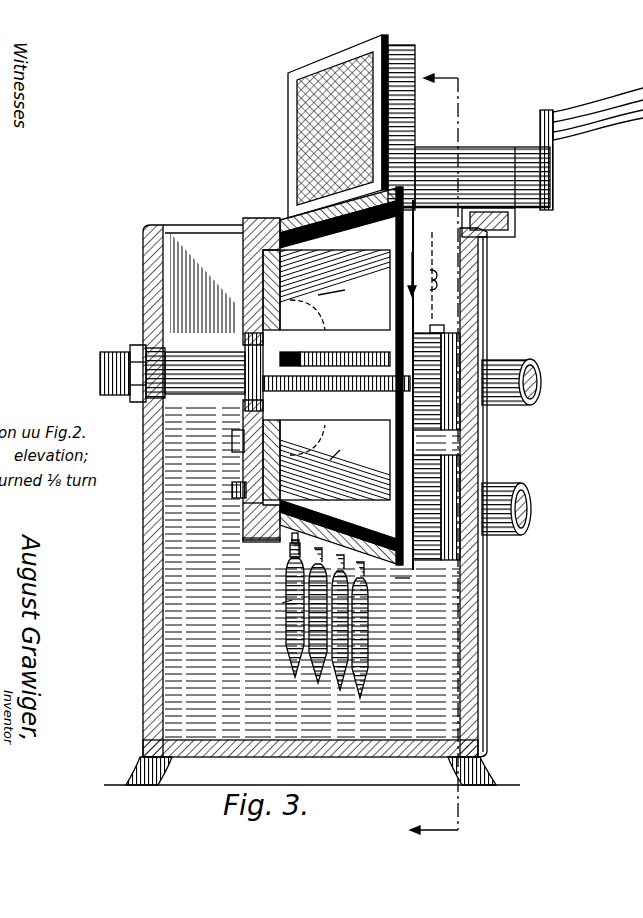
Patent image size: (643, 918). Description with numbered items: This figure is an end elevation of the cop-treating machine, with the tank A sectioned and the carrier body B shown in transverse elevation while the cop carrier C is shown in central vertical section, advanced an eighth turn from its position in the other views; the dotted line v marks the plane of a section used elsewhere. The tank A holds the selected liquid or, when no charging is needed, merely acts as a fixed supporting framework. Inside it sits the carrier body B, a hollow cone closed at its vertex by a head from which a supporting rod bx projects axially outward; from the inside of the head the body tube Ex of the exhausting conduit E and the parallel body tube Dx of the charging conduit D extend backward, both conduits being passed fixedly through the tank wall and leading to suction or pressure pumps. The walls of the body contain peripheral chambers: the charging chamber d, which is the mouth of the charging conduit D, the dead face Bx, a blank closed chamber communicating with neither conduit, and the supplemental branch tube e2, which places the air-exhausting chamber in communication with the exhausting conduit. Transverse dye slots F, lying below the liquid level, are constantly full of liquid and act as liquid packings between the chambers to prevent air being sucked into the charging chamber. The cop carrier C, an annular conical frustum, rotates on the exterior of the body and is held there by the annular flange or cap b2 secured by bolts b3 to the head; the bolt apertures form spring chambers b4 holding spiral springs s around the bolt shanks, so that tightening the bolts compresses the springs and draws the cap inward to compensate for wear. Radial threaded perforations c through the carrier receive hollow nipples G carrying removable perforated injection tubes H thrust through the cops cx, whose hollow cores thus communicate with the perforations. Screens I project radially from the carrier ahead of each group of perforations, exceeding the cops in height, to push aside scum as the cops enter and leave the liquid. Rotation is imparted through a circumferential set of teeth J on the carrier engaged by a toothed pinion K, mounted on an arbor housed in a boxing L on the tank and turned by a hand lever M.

The tank A is at (143, 285).
The carrier body B is at (355, 378).
The dead face Bx is at (339, 282).
The supporting rod bx is at (100, 376).
The annular flange or cap b2 is at (248, 538).
The bolts b3 is at (232, 491).
The spring chambers b4 is at (243, 480).
The cop carrier C is at (272, 218).
The perforations c is at (290, 540).
The cops cx is at (275, 602).
The charging chamber d is at (343, 454).
The charging conduit D is at (531, 507).
The body tube Dx is at (436, 507).
The exhausting conduit E is at (382, 365).
The body tube Ex is at (436, 377).
The supplemental branch tube e2 is at (292, 360).
The dye slots F is at (245, 396).
The hollow nipples G is at (292, 550).
The perforated injection tubes H is at (294, 662).
The screens I is at (290, 118).
The teeth J is at (400, 578).
The toothed pinion K is at (405, 115).
The boxing L is at (464, 158).
The hand lever M is at (615, 138).
The spiral springs s is at (243, 505).
The section line v is at (440, 448).